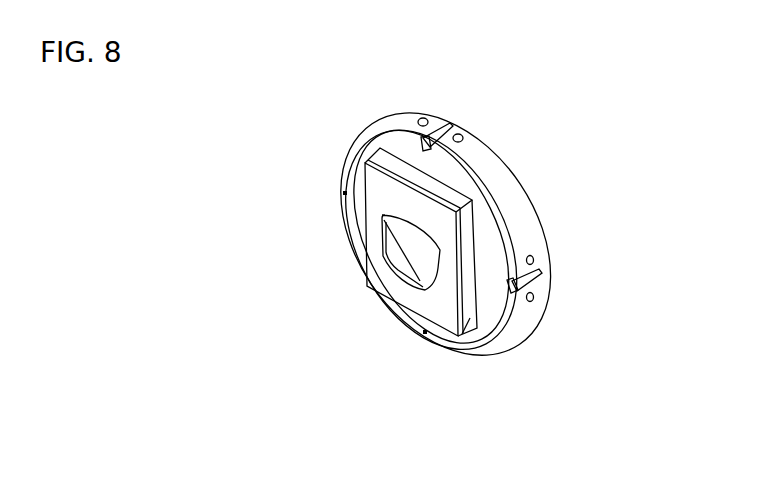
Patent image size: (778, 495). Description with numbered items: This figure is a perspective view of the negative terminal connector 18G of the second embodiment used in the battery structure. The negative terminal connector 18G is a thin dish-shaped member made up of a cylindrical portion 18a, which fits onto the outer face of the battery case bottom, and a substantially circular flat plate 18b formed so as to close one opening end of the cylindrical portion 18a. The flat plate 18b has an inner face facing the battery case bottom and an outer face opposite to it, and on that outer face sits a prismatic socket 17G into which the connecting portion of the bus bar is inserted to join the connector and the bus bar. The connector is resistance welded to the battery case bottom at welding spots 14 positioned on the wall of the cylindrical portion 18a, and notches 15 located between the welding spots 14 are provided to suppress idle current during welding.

The welding spots 14 is at (459, 134).
The notches 15 is at (424, 140).
The socket 17G is at (380, 275).
The negative terminal connector 18G is at (463, 226).
The cylindrical portion 18a is at (523, 220).
The flat plate 18b is at (493, 278).